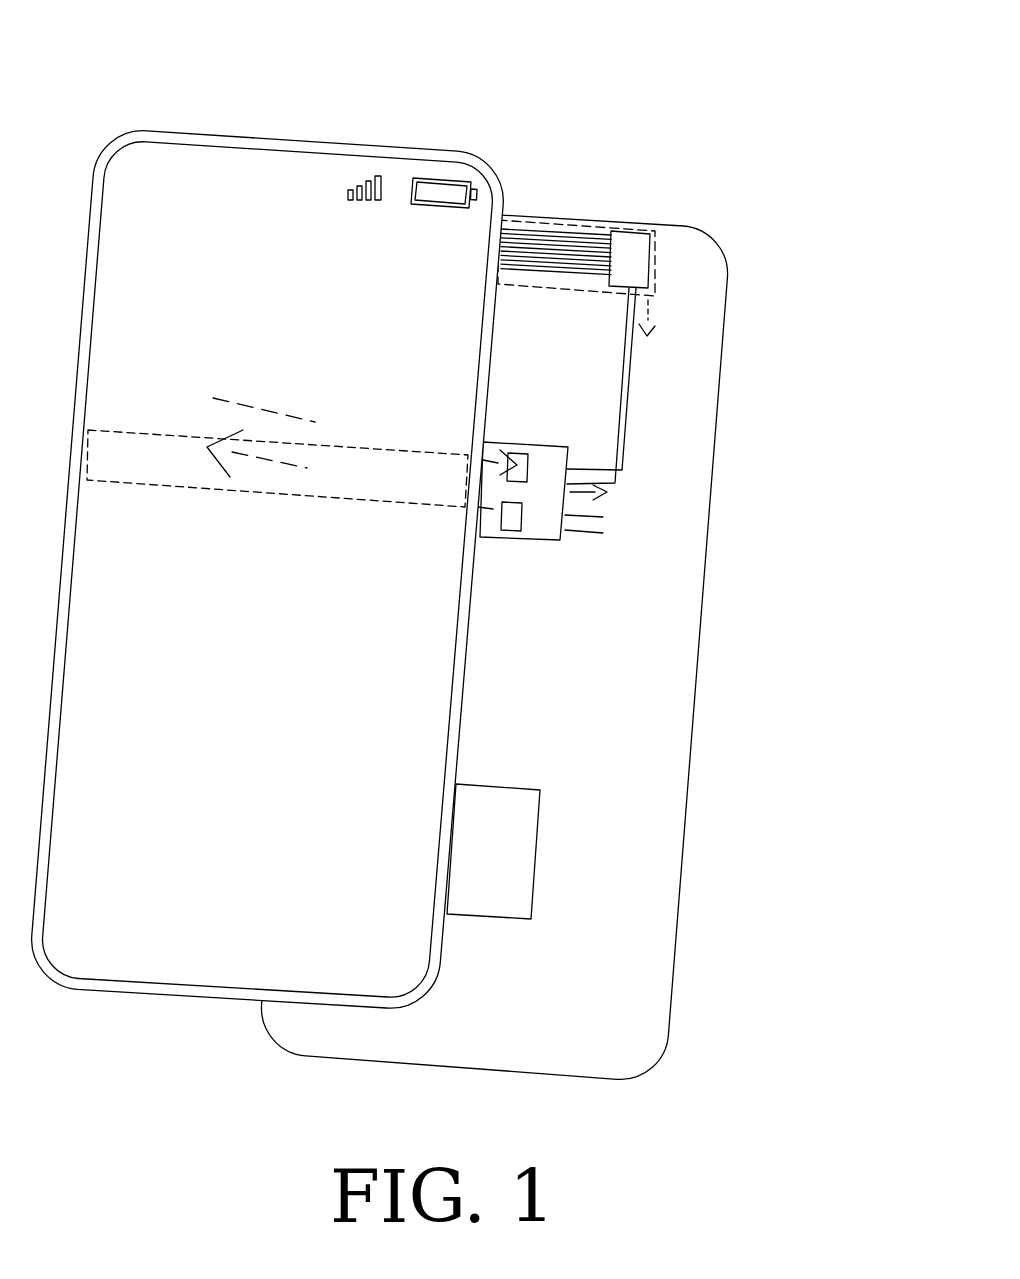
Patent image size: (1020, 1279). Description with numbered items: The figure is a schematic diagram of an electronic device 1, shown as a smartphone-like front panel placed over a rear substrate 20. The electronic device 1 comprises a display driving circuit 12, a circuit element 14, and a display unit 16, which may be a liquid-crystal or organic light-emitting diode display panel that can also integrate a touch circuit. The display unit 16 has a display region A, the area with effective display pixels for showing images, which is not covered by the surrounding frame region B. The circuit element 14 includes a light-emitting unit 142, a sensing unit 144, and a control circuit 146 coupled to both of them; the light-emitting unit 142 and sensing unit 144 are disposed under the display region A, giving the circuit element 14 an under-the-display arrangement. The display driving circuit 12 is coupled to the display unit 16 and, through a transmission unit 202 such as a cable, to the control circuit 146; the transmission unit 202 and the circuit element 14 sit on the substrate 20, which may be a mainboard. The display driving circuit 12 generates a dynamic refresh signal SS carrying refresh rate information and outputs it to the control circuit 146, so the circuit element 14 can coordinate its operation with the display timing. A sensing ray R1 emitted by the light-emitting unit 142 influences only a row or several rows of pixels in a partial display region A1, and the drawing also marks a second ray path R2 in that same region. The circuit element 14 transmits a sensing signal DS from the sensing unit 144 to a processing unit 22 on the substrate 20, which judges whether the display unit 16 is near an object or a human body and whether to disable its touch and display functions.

The electronic device 1 is at (634, 66).
The display driving circuit 12 is at (657, 280).
The circuit element 14 is at (557, 450).
The display unit 16 is at (421, 148).
The substrate 20 is at (718, 415).
The processing unit 22 is at (533, 888).
The light-emitting unit 142 is at (511, 532).
The sensing unit 144 is at (520, 452).
The control circuit 146 is at (546, 541).
The transmission unit 202 is at (651, 262).
The display region A is at (292, 176).
The frame region B is at (262, 138).
The partial display region A1 is at (130, 430).
The sensing ray R1 is at (278, 463).
The second direction R2 is at (278, 413).
The dynamic refresh signal SS is at (650, 318).
The sensing signal DS is at (592, 500).